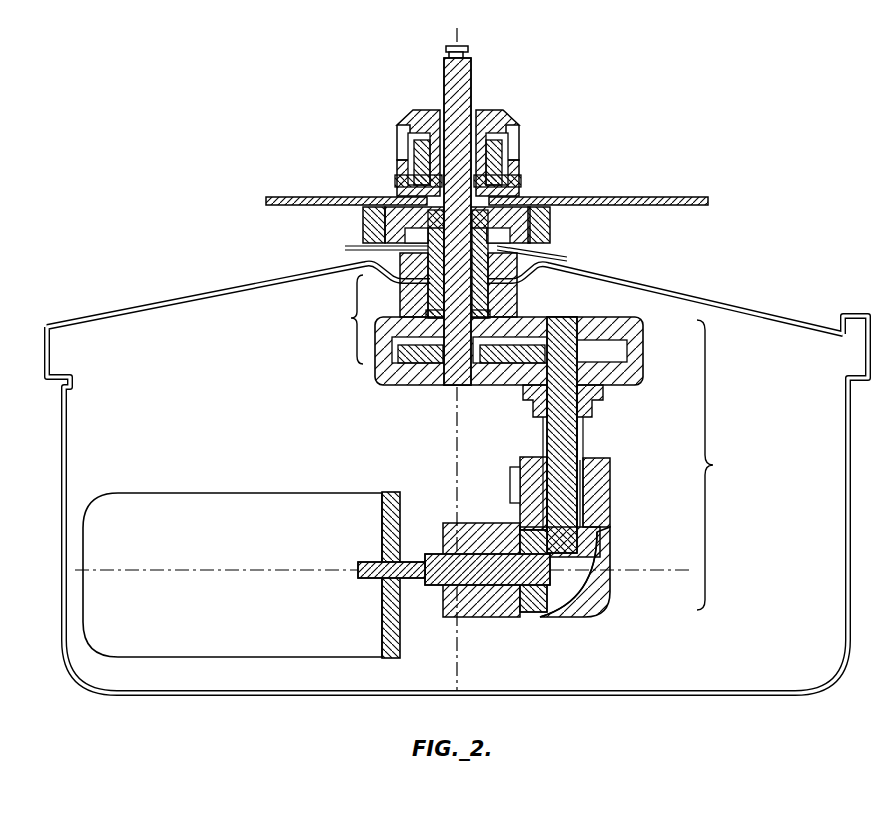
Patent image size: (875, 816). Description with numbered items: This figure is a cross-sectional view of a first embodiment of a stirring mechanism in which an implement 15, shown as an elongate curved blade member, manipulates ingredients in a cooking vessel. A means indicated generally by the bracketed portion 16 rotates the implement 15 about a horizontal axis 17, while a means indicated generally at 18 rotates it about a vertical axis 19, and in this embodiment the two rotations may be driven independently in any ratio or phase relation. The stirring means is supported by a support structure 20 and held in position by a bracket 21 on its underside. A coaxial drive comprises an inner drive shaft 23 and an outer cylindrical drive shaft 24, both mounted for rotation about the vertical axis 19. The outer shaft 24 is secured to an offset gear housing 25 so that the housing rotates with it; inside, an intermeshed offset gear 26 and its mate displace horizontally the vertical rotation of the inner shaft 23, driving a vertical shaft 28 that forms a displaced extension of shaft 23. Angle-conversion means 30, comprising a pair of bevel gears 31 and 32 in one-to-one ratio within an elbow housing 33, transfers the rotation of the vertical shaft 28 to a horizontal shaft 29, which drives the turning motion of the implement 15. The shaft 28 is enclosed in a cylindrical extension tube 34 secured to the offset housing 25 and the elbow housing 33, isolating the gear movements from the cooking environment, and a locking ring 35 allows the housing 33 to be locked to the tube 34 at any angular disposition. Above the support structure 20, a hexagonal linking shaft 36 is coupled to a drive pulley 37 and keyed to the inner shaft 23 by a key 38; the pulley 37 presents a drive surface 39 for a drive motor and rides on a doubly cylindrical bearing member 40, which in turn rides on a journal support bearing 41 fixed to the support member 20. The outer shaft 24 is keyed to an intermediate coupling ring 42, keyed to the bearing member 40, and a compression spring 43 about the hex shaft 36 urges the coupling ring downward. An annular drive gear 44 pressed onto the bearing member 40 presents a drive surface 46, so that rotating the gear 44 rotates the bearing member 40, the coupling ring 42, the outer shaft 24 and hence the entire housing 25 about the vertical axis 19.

The implement 15 is at (140, 493).
The means for rotating the implement about a horizontal axis 16 is at (722, 465).
The horizontal axis 17 is at (228, 570).
The means for rotating the implement about a vertical axis 18 is at (342, 319).
The vertical axis 19 is at (456, 412).
The support structure 20 is at (630, 206).
The bracket 21 is at (550, 226).
The inner drive shaft 23 is at (490, 300).
The outer cylindrical drive shaft 24 is at (363, 226).
The offset gear housing 25 is at (632, 321).
The offset gear 26 is at (377, 378).
The vertical shaft 28 is at (584, 423).
The horizontal shaft 29 is at (414, 560).
The angle-conversion means 30 is at (594, 626).
The bevel gear 31 is at (598, 550).
The bevel gear 32 is at (536, 612).
The elbow housing 33 is at (612, 527).
The extension tube 34 is at (584, 445).
The locking ring 35 is at (584, 465).
The hexagonal linking shaft 36 is at (471, 78).
The drive pulley 37 is at (513, 118).
The key 38 is at (498, 178).
The drive surface 39 is at (512, 132).
The doubly cylindrical bearing member 40 is at (409, 140).
The journal support bearing 41 is at (430, 183).
The intermediate coupling ring 42 is at (414, 164).
The compression spring 43 is at (413, 130).
The annular drive gear 44 is at (522, 158).
The drive surface 46 is at (518, 172).